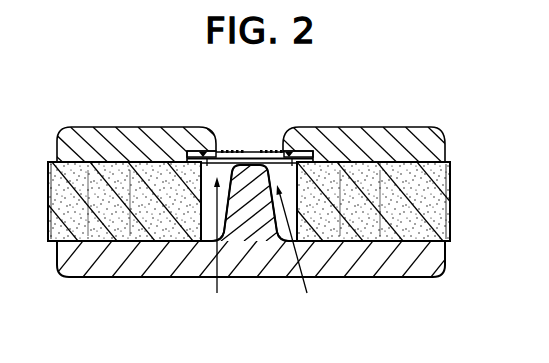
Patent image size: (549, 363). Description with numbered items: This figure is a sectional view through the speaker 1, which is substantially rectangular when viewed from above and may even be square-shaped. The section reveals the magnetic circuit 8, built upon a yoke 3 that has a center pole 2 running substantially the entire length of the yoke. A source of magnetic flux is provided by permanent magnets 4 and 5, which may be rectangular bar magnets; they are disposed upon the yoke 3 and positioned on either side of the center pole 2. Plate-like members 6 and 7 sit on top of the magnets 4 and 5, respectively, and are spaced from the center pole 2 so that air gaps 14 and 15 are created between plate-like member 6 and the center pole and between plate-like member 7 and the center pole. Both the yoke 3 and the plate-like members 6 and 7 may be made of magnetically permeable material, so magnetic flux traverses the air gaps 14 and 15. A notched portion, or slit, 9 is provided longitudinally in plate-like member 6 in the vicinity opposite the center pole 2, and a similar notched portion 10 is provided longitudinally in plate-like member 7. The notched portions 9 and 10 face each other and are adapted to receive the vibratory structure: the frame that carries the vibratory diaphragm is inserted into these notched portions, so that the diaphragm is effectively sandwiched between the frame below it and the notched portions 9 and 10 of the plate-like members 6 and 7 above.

The speaker 1 is at (398, 118).
The center pole 2 is at (263, 233).
The yoke 3 is at (153, 268).
The permanent magnet 4 is at (58, 203).
The permanent magnet 5 is at (435, 202).
The plate-like member 6 is at (94, 136).
The plate-like member 7 is at (355, 137).
The magnetic circuit 8 is at (73, 266).
The notched portion 9 is at (201, 152).
The notched portion 10 is at (289, 152).
The air gap 14 is at (216, 248).
The air gap 15 is at (304, 252).